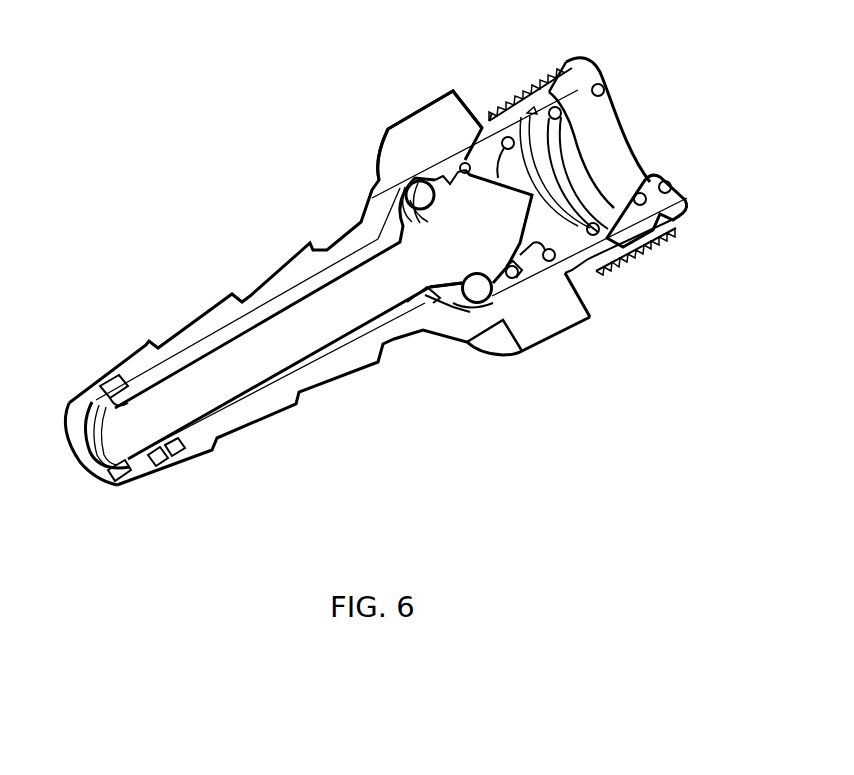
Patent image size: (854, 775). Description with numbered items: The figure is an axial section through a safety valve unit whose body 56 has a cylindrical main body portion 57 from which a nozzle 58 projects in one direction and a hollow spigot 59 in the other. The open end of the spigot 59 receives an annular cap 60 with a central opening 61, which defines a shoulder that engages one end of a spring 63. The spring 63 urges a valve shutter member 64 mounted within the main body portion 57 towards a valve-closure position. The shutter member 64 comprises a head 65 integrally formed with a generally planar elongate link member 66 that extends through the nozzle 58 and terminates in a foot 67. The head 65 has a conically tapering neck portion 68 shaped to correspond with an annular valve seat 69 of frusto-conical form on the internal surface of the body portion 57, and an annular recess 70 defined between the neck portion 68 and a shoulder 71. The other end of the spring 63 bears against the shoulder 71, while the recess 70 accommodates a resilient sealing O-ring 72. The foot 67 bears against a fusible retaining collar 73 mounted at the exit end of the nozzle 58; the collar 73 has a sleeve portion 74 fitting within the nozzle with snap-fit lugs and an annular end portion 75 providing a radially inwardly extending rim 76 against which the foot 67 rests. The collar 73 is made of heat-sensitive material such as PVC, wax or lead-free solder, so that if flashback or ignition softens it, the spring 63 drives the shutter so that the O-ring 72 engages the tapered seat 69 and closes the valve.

The body 56 is at (345, 113).
The cylindrical main body portion 57 is at (577, 313).
The nozzle 58 is at (181, 306).
The hollow spigot 59 is at (647, 252).
The annular cap 60 is at (677, 202).
The central opening 61 is at (620, 150).
The spring 63 is at (551, 113).
The valve shutter member 64 is at (473, 192).
The head 65 is at (436, 183).
The elongate link member 66 is at (263, 335).
The foot 67 is at (100, 443).
The neck portion 68 is at (448, 295).
The annular valve seat 69 is at (467, 315).
The annular recess 70 is at (417, 223).
The shoulder 71 is at (508, 293).
The sealing O-ring 72 is at (400, 187).
The retaining collar 73 is at (147, 467).
The sleeve portion 74 is at (170, 453).
The annular end portion 75 is at (72, 398).
The rim 76 is at (123, 473).